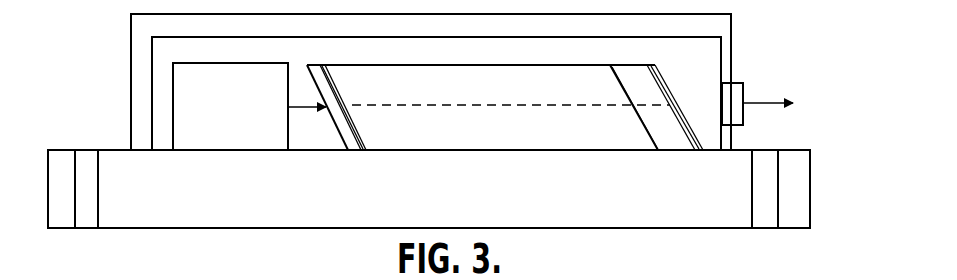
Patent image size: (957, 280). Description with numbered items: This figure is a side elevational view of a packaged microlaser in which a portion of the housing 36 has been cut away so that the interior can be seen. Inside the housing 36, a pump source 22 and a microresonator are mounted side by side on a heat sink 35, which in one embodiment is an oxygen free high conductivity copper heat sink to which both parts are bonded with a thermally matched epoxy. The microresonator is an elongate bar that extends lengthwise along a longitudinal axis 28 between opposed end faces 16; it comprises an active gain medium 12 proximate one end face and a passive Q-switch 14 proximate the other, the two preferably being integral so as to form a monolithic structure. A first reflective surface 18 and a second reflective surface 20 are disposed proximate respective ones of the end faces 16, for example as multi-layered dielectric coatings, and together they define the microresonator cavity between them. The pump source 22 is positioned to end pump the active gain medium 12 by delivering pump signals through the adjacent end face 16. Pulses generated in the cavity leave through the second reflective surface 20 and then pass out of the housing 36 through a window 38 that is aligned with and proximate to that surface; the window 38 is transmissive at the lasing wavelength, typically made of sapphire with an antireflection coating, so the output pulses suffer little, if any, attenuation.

The active gain medium 12 is at (482, 122).
The Q-switch 14 is at (660, 142).
The end faces 16 is at (338, 92).
The first reflective surface 18 is at (325, 126).
The second reflective surface 20 is at (695, 125).
The pump source 22 is at (249, 126).
The longitudinal axis 28 is at (433, 98).
The heat sink 35 is at (429, 206).
The housing 36 is at (726, 38).
The window 38 is at (737, 117).